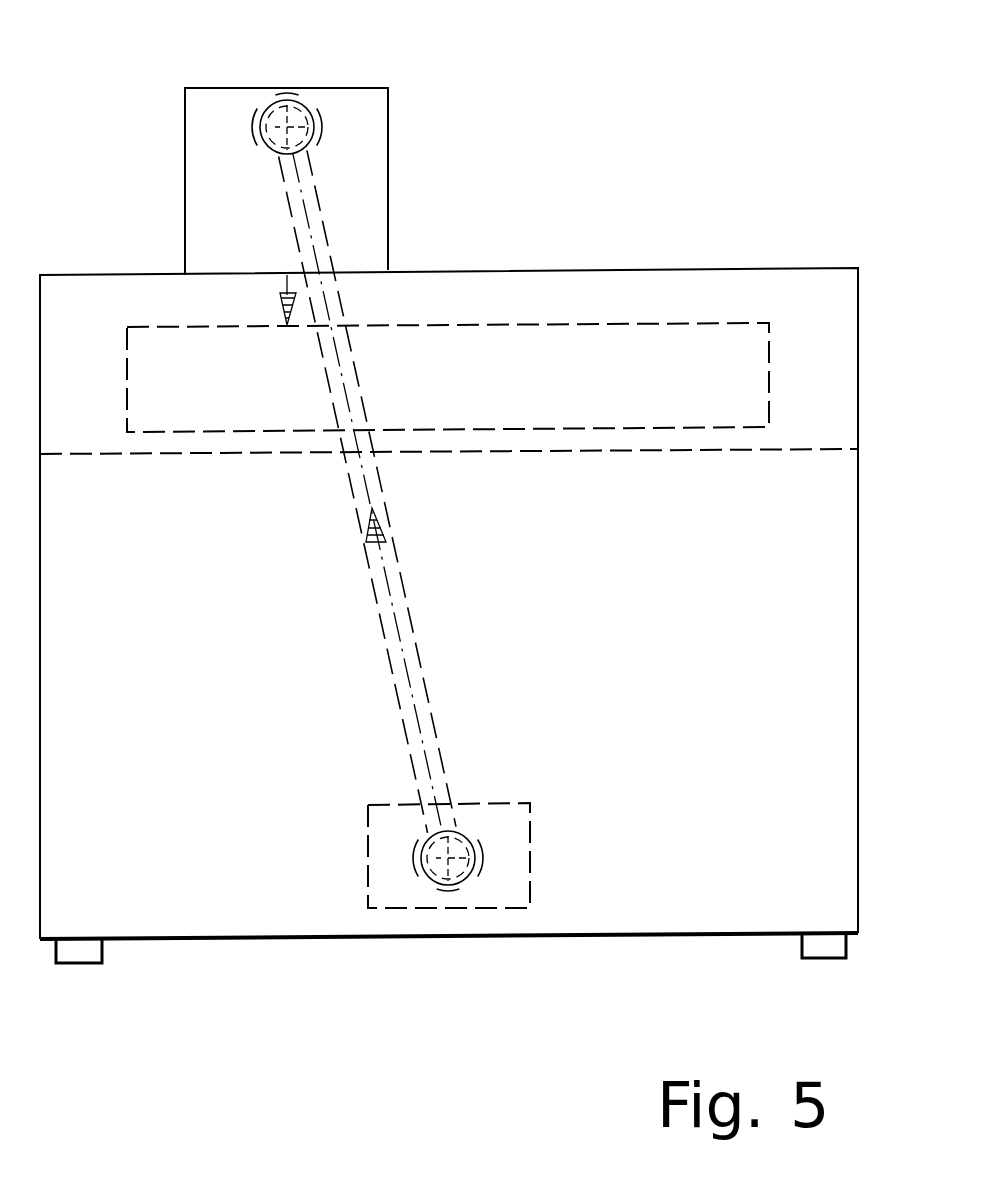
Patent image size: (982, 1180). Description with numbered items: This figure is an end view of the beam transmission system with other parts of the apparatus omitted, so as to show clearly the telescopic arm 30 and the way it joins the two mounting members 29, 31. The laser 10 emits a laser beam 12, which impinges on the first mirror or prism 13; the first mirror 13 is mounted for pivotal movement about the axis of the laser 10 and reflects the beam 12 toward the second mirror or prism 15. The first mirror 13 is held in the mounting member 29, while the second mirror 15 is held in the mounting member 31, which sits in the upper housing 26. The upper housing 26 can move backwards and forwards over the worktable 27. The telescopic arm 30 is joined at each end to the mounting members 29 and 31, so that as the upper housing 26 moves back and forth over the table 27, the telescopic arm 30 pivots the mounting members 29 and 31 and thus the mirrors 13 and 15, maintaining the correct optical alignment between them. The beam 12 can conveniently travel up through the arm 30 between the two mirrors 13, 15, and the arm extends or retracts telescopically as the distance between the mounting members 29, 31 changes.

The laser 10 is at (532, 867).
The laser beam 12 is at (365, 482).
The first mirror or prism 13 is at (420, 877).
The second mirror or prism 15 is at (268, 107).
The upper housing 26 is at (390, 150).
The worktable 27 is at (592, 323).
The mounting member 29 is at (475, 885).
The telescopic arm 30 is at (357, 369).
The mounting member 31 is at (325, 130).